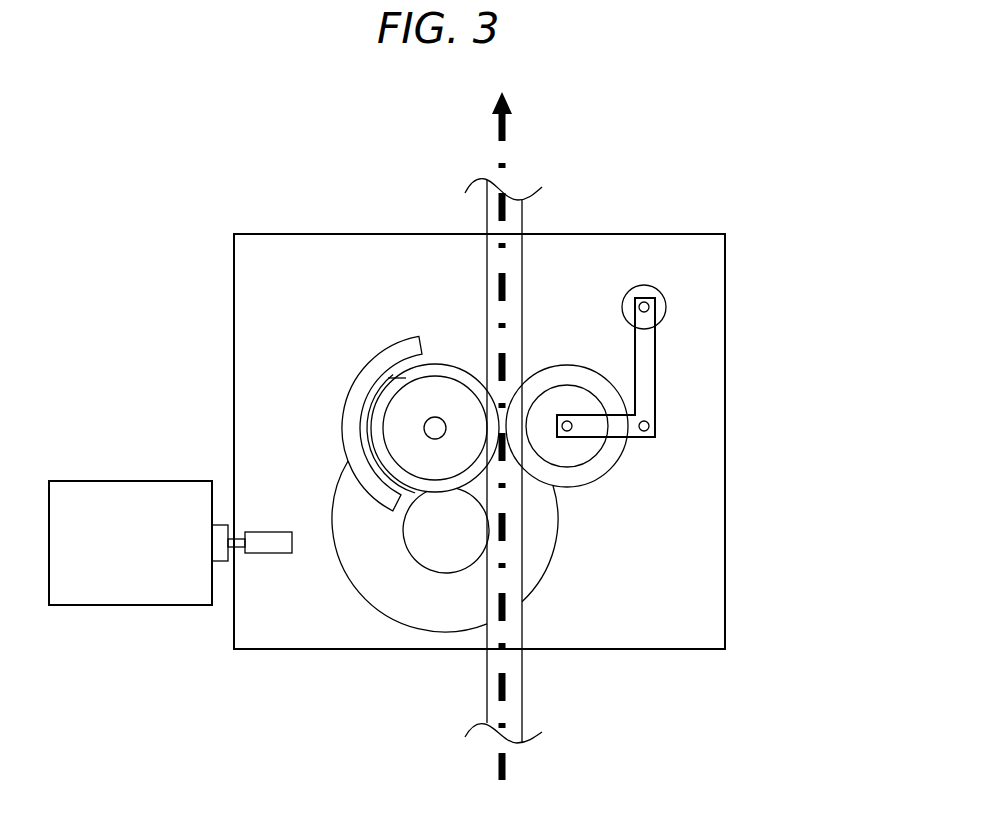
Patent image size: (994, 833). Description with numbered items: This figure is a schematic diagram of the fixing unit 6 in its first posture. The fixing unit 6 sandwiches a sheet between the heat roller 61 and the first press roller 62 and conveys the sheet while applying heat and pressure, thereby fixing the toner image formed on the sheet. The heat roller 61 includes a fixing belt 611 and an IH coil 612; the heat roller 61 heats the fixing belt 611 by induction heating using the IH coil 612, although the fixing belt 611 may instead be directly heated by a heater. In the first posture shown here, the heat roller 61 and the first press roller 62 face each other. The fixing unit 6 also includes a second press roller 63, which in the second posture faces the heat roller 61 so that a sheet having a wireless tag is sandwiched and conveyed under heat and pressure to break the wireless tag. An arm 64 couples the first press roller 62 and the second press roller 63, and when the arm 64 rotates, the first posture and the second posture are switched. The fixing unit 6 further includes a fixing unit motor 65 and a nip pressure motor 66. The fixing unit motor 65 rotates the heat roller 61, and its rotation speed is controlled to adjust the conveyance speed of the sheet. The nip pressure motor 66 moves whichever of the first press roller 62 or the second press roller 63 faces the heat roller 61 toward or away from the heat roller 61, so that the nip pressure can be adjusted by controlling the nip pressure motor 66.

The fixing unit 6 is at (636, 171).
The heat roller 61 is at (318, 336).
The fixing belt 611 is at (390, 380).
The IH coil 612 is at (343, 402).
The first press roller 62 is at (613, 458).
The second press roller 63 is at (667, 305).
The arm 64 is at (650, 389).
The fixing unit motor 65 is at (392, 597).
The nip pressure motor 66 is at (167, 590).